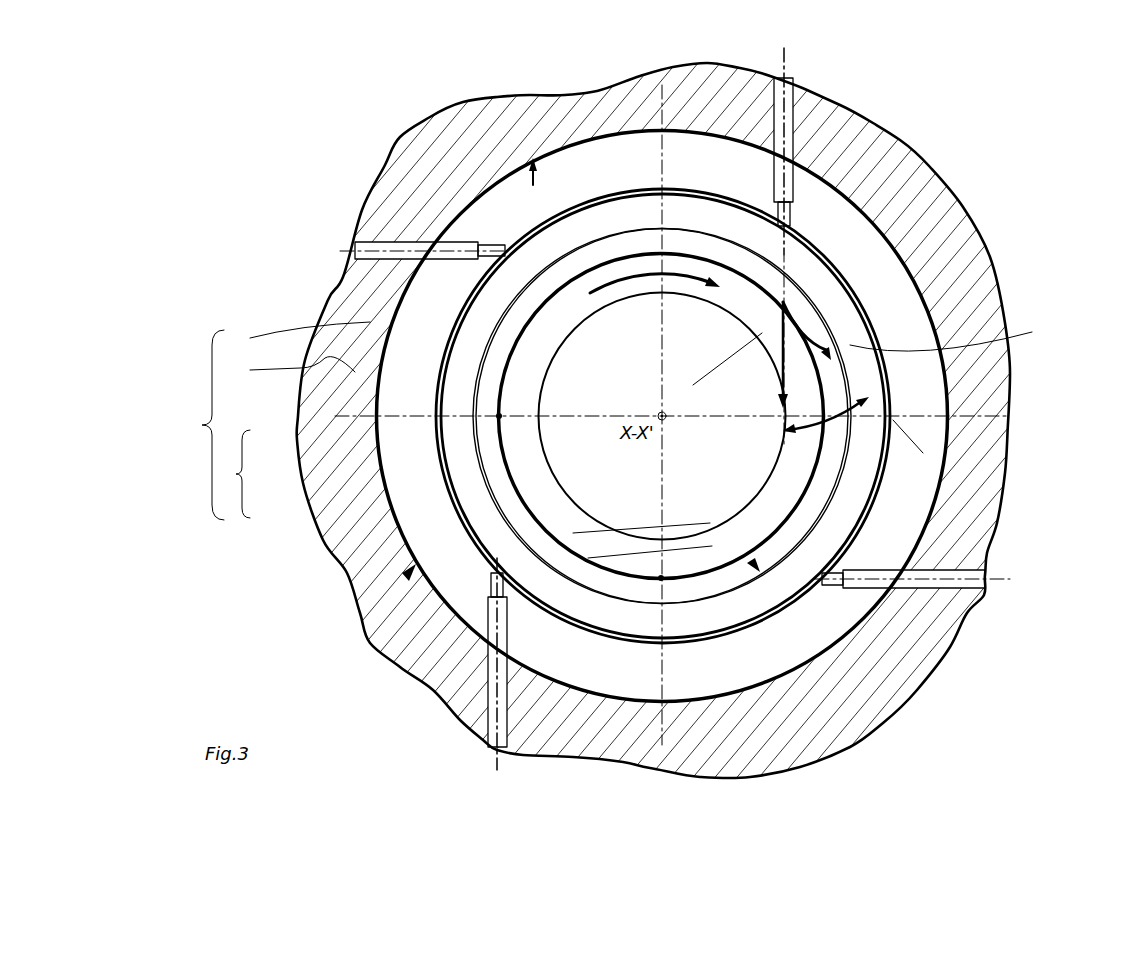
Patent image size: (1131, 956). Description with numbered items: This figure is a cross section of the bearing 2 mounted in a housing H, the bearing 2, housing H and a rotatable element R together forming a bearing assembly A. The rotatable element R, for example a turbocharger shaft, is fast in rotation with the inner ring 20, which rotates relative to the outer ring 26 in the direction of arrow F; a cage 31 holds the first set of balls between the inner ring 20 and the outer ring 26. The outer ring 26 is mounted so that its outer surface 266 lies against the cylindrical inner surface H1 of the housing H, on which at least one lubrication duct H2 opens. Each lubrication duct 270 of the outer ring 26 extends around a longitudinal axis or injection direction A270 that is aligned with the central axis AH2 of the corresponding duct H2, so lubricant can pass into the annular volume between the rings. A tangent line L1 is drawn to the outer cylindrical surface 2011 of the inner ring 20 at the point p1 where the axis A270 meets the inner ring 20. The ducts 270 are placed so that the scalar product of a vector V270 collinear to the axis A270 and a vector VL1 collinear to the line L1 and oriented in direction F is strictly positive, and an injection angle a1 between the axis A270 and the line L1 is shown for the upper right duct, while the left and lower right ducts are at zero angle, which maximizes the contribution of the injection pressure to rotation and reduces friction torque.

The bearing 2 is at (236, 474).
The inner ring 20 is at (400, 470).
The outer ring 26 is at (400, 455).
The cage 31 is at (400, 400).
The outer surface of outer ring 266 is at (405, 573).
The lubrication duct 270 is at (470, 245).
The outer cylindrical surface of first part 2011 is at (750, 593).
The bearing assembly A is at (201, 425).
The rotatable element R is at (301, 334).
The housing H is at (293, 368).
The cylindrical inner surface of housing H1 is at (523, 193).
The lubrication duct of housing H2 is at (790, 137).
The longitudinal axis or injection direction A270 is at (786, 52).
The central axis of lubrication duct H2 AH2 is at (497, 763).
The tangent line L1 is at (716, 232).
The point p1 is at (500, 418).
The vector collinear to tangent line VL1 is at (959, 339).
The injection angle a1 is at (870, 420).
The rotation direction F is at (685, 283).
The vector collinear to longitudinal axis V270 is at (773, 355).